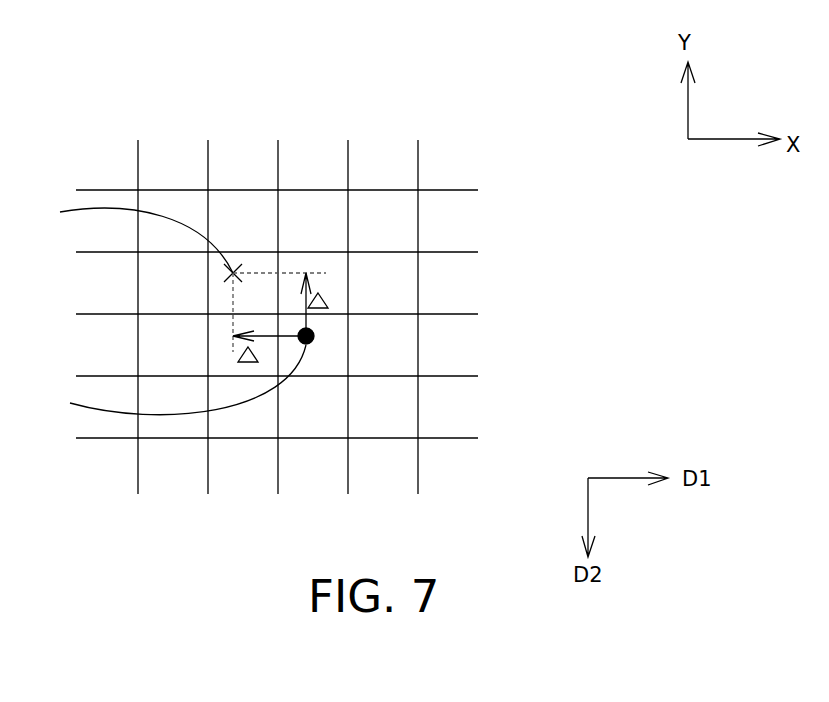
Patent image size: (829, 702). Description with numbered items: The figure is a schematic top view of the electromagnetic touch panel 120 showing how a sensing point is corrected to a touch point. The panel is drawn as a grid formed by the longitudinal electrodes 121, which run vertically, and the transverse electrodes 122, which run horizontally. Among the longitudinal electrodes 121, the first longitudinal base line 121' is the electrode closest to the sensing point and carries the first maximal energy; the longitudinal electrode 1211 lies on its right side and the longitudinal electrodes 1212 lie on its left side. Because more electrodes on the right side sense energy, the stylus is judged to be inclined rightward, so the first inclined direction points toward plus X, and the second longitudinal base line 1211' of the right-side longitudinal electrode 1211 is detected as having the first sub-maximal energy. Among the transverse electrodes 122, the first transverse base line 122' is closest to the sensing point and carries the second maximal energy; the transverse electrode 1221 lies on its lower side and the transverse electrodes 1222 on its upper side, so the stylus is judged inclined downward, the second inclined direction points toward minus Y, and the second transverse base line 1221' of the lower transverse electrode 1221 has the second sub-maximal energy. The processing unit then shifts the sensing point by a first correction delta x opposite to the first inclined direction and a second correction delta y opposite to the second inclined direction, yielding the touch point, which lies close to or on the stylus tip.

The electromagnetic touch panel 120 is at (64, 77).
The longitudinal electrodes 121 is at (241, 362).
The longitudinal electrode 1212 is at (138, 458).
The first longitudinal base line 121' is at (247, 331).
The second longitudinal base line 1211' is at (314, 331).
The longitudinal electrode 1211 is at (386, 331).
The transverse electrodes 122 is at (354, 292).
The transverse electrode 1222 is at (455, 190).
The first transverse base line 122' is at (311, 292).
The second transverse base line 1221' is at (317, 354).
The transverse electrode 1221 is at (314, 416).